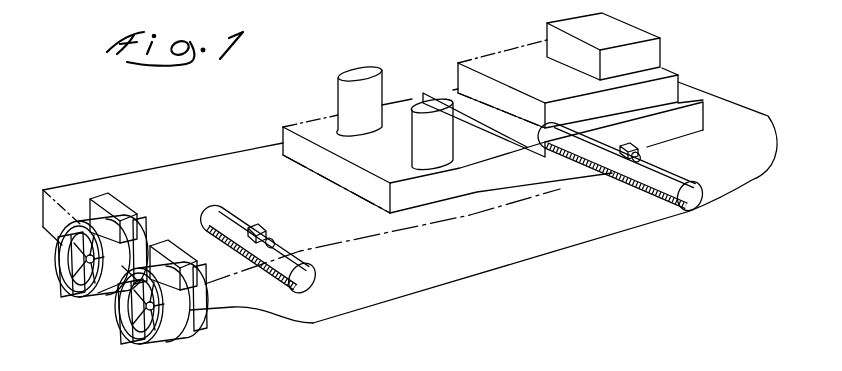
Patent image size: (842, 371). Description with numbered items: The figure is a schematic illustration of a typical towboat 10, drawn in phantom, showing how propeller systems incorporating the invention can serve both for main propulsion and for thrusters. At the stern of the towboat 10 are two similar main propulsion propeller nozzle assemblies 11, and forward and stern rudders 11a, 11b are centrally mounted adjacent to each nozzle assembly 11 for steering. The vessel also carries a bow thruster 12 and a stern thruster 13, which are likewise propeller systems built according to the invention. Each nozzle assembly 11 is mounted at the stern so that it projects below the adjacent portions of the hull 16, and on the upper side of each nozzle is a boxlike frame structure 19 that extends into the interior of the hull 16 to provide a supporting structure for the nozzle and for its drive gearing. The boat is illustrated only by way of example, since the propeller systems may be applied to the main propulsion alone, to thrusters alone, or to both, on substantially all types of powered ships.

The towboat 10 is at (560, 253).
The main propulsion propeller nozzle assembly 11 is at (100, 300).
The forward rudder 11a is at (147, 230).
The stern rudder 11b is at (63, 297).
The bow thruster 12 is at (633, 187).
The stern thruster 13 is at (282, 247).
The hull 16 is at (236, 309).
The boxlike frame structure 19 is at (100, 202).